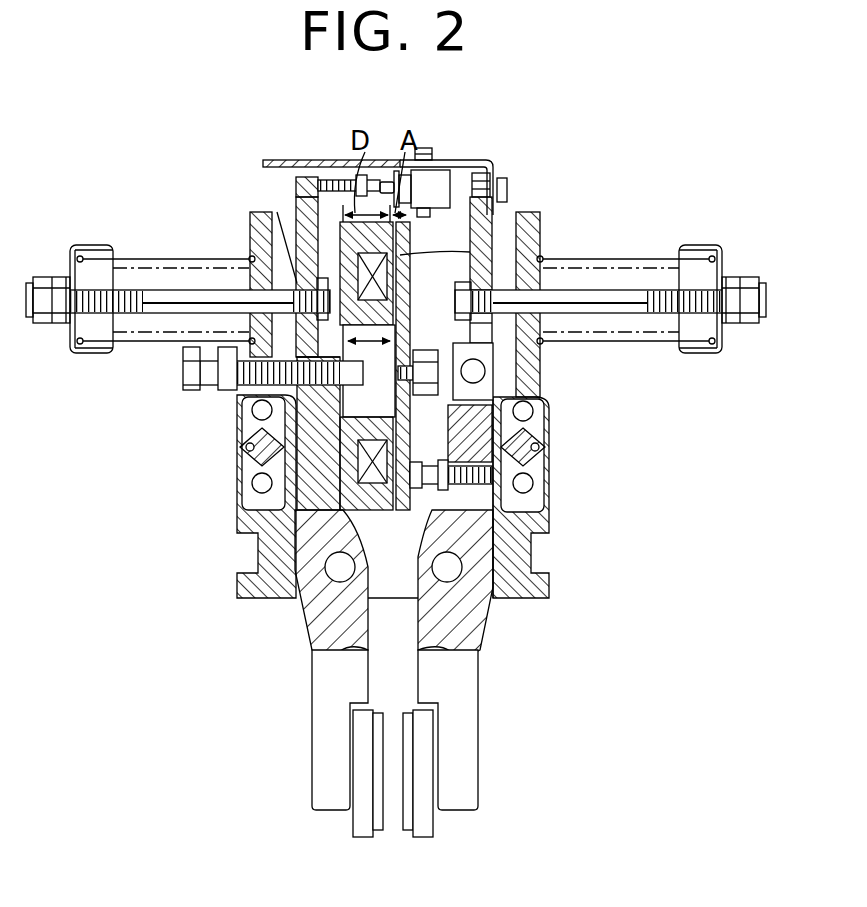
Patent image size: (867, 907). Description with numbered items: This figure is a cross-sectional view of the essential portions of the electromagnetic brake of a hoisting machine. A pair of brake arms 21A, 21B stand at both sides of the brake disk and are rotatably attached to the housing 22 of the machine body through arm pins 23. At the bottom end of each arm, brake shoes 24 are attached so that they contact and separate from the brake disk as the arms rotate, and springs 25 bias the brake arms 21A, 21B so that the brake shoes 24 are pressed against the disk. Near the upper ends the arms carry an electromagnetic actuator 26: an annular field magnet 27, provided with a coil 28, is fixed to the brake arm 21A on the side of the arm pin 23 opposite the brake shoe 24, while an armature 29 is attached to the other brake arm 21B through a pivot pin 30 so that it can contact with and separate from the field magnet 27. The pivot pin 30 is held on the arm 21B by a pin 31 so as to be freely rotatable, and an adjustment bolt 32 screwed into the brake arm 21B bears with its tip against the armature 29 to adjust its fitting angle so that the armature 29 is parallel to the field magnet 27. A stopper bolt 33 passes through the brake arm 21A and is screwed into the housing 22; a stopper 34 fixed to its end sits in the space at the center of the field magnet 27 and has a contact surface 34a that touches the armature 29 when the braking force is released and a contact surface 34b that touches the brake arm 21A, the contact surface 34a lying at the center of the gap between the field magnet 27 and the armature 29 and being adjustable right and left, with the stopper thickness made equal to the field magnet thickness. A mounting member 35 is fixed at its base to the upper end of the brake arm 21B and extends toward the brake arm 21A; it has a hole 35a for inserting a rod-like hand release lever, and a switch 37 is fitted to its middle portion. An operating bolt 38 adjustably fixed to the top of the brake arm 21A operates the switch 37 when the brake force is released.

The brake arm 21A is at (310, 722).
The brake arm 21B is at (480, 722).
The housing 22 is at (550, 596).
The arm pin 23 is at (483, 597).
The brake shoe 24 is at (412, 828).
The spring 25 is at (180, 262).
The electromagnetic actuator 26 is at (336, 236).
The field magnet 27 is at (330, 507).
The coil 28 is at (347, 490).
The armature 29 is at (496, 280).
The pivot pin 30 is at (475, 371).
The pin 31 is at (505, 375).
The adjustment bolt 32 is at (505, 470).
The stopper bolt 33 is at (205, 393).
The stopper 34 is at (244, 462).
The contact surface 34a is at (400, 408).
The contact surface 34b is at (340, 413).
The mounting member 35 is at (470, 162).
The hole 35a is at (290, 160).
The switch 37 is at (396, 182).
The operating bolt 38 is at (340, 182).